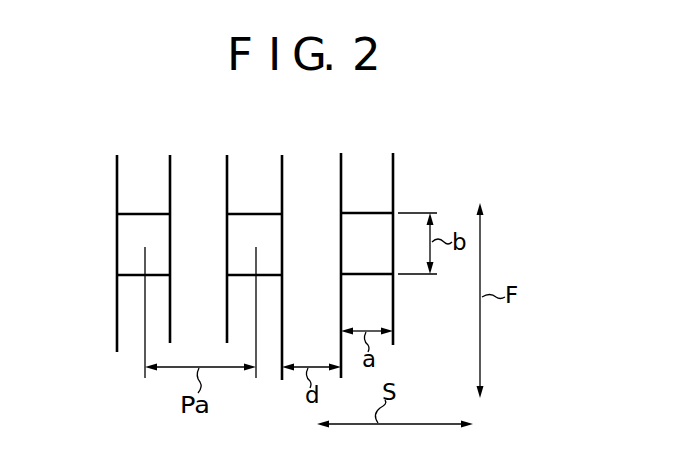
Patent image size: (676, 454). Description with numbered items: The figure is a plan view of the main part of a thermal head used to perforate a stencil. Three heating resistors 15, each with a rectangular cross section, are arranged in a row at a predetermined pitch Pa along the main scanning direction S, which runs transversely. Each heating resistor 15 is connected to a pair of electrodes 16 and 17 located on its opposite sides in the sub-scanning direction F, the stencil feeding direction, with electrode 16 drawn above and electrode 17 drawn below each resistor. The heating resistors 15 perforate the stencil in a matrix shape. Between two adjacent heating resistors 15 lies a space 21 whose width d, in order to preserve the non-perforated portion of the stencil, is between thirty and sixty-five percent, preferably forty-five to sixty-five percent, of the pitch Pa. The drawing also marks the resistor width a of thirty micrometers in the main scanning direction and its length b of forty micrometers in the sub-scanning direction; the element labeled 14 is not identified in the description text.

The heating element array 14 is at (452, 204).
The heating resistor 15 is at (128, 263).
The electrode 16 is at (152, 185).
The electrode 17 is at (128, 320).
The space 21 is at (319, 230).